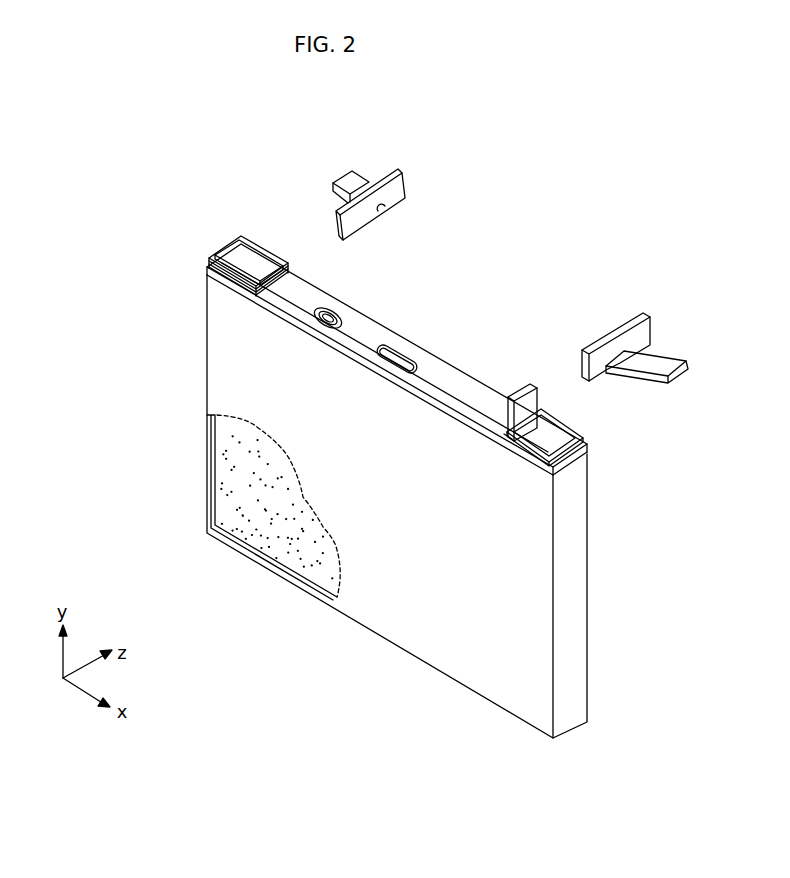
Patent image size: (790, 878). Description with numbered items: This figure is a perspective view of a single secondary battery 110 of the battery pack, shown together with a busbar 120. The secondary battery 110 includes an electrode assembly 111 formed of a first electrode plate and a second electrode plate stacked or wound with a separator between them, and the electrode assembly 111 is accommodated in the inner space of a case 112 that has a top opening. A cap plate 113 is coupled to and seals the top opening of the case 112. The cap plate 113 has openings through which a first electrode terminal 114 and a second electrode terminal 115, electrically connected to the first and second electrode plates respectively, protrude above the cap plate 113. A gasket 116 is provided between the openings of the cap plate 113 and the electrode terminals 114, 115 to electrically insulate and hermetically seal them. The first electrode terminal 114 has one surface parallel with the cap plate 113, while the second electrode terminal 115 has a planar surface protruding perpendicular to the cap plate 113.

The secondary battery 110 is at (397, 491).
The electrode assembly 111 is at (287, 552).
The case 112 is at (390, 628).
The cap plate 113 is at (306, 300).
The first electrode terminal 114 is at (252, 258).
The second electrode terminal 115 is at (532, 402).
The gasket 116 is at (207, 276).
The busbar 120 is at (411, 158).